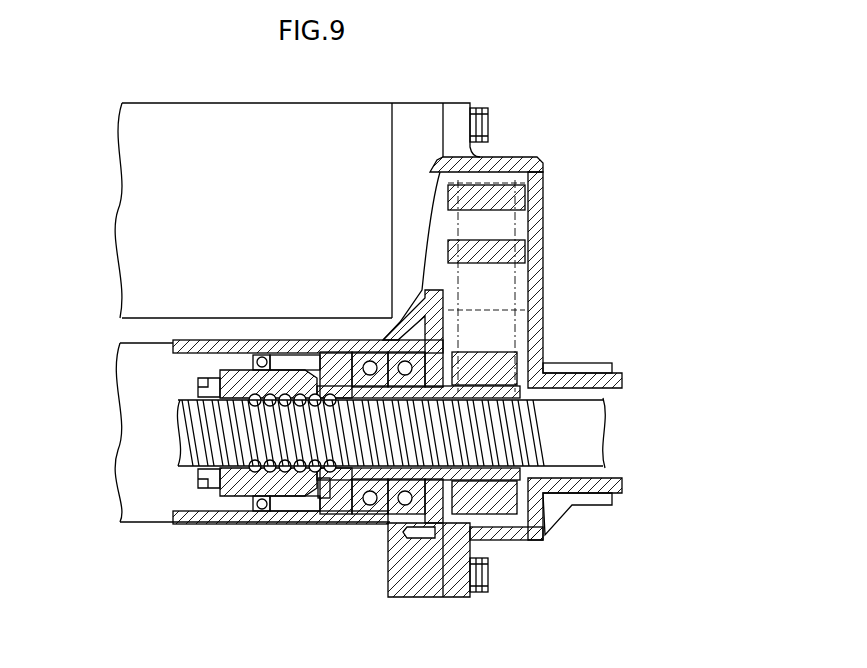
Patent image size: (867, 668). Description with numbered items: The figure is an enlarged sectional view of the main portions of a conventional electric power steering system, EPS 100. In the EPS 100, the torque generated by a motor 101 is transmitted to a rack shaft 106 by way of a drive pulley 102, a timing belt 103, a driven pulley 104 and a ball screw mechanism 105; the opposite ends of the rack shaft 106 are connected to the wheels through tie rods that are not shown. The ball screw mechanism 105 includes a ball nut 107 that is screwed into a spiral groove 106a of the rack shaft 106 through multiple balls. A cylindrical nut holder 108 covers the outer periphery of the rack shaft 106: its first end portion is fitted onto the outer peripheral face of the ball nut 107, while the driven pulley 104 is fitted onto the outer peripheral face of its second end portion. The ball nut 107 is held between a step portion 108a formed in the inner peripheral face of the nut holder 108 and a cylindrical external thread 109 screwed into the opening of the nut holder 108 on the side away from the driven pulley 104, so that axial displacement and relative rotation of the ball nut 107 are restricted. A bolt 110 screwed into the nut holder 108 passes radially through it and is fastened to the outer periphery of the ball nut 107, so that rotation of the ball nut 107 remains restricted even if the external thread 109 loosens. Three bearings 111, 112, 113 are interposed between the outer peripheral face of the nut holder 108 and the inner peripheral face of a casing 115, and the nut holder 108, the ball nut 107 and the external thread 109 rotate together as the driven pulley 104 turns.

The EPS 100 is at (578, 154).
The motor 101 is at (137, 103).
The drive pulley 102 is at (522, 203).
The timing belt 103 is at (530, 292).
The driven pulley 104 is at (520, 353).
The ball screw mechanism 105 is at (235, 365).
The rack shaft 106 is at (598, 445).
The spiral groove 106a is at (180, 392).
The ball nut 107 is at (280, 480).
The nut holder 108 is at (238, 490).
The step portion 108a is at (318, 375).
The external thread 109 is at (197, 487).
The bolt 110 is at (333, 493).
The bearing 111 is at (372, 350).
The bearing 112 is at (365, 345).
The bearing 113 is at (263, 354).
The casing 115 is at (125, 517).